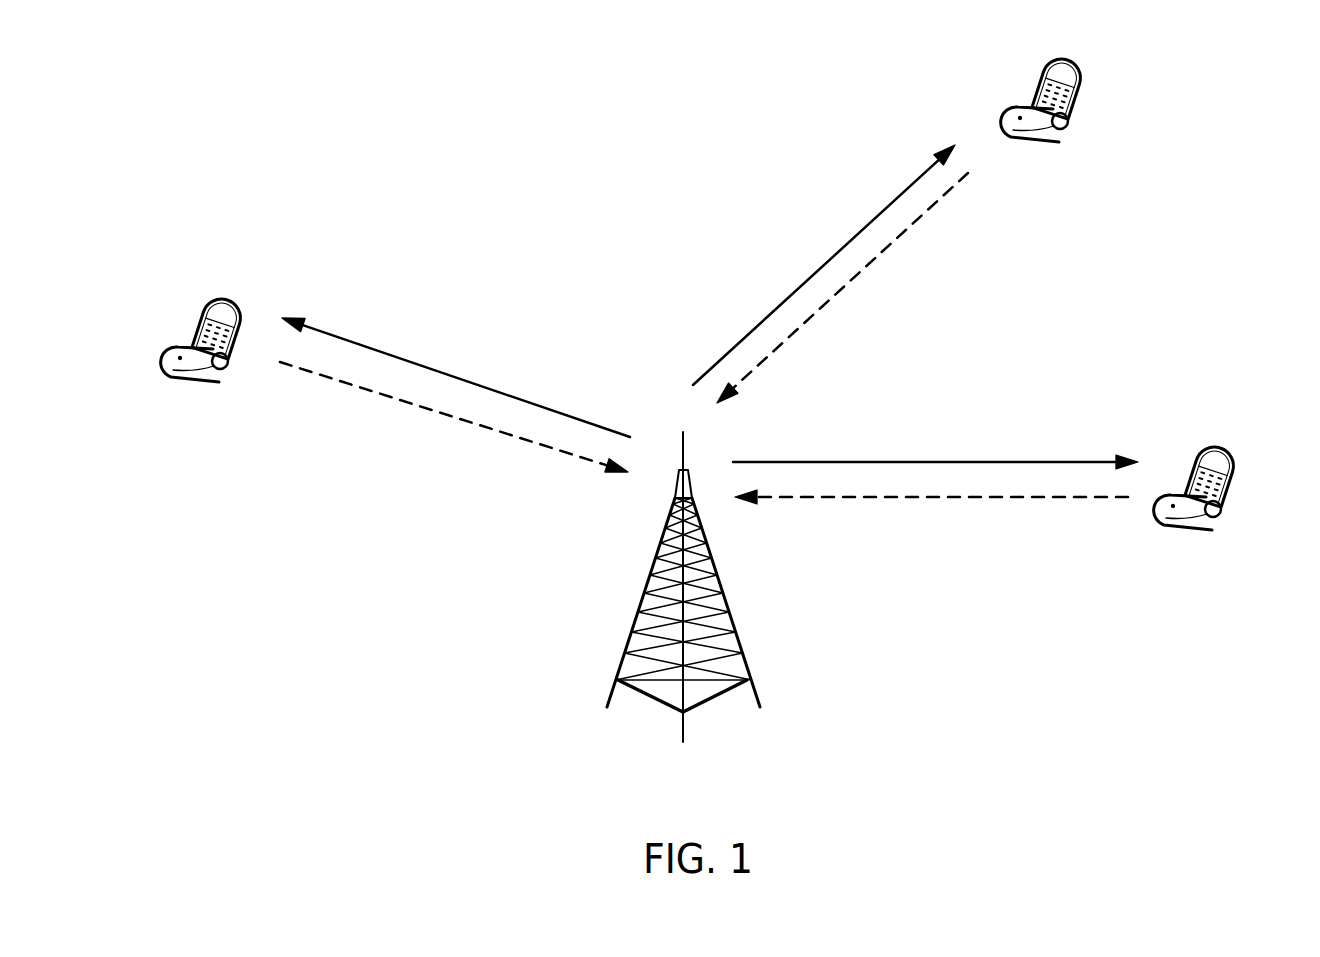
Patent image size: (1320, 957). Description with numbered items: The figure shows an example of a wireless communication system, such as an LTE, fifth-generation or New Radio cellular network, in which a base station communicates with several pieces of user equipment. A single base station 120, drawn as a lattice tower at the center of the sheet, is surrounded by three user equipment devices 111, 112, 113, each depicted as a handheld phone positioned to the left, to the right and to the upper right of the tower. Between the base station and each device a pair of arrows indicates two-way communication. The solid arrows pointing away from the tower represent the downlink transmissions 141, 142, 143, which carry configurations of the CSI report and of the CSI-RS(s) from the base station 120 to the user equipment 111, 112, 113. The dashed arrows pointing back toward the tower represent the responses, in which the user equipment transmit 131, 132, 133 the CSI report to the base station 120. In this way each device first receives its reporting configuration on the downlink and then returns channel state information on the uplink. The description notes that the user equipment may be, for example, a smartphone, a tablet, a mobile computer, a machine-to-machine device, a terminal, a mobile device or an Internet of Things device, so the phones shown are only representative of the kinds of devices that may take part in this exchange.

The user equipment 111 is at (218, 378).
The user equipment 112 is at (1206, 524).
The user equipment 113 is at (1058, 138).
The base station 120 is at (743, 663).
The CSI report transmission 131 is at (492, 432).
The CSI report transmission 132 is at (897, 498).
The CSI report transmission 133 is at (867, 263).
The downlink transmission 141 is at (390, 355).
The downlink transmission 142 is at (1048, 458).
The downlink transmission 143 is at (873, 215).